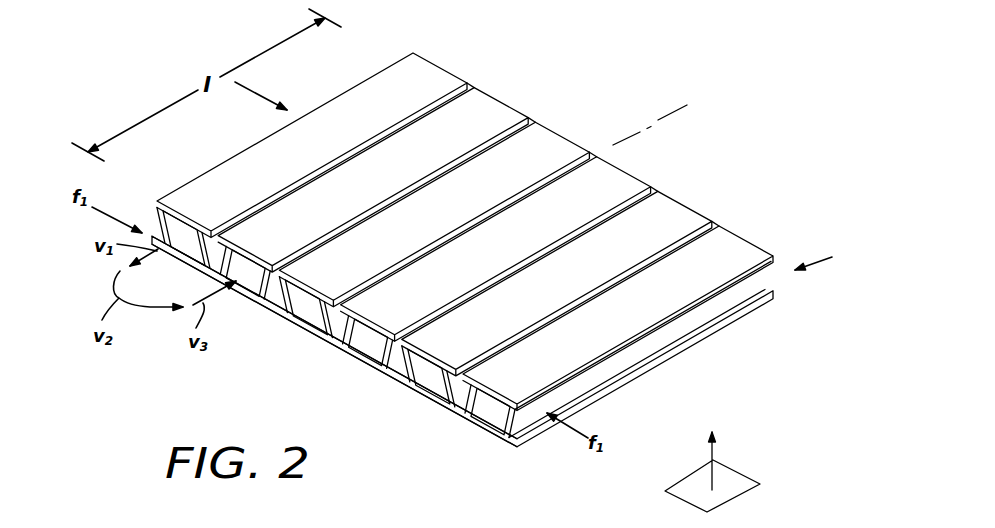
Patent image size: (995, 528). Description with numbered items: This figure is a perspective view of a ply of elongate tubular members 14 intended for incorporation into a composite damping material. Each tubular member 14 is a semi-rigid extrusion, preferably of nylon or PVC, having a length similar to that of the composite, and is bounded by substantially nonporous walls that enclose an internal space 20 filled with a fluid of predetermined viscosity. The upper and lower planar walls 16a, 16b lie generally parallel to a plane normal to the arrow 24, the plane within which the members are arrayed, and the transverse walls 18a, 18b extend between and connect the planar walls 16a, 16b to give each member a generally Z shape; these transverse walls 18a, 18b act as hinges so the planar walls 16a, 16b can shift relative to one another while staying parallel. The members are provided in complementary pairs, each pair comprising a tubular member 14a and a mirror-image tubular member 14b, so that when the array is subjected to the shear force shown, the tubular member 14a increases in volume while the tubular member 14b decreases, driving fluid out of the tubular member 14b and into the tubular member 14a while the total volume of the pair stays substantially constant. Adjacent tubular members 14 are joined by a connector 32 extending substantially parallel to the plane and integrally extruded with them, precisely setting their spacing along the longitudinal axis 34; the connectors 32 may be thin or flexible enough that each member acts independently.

The tubular member 14 is at (650, 168).
The tubular member 14a is at (493, 104).
The mirror image tubular member 14b is at (435, 72).
The upper planar wall 16a is at (430, 348).
The lower planar wall 16b is at (428, 397).
The transverse wall 18a is at (266, 306).
The transverse wall 18b is at (343, 317).
The internal space 20 is at (314, 322).
The arrow (plane normal) 24 is at (738, 470).
The connector 32 is at (396, 373).
The longitudinal axis 34 is at (659, 118).